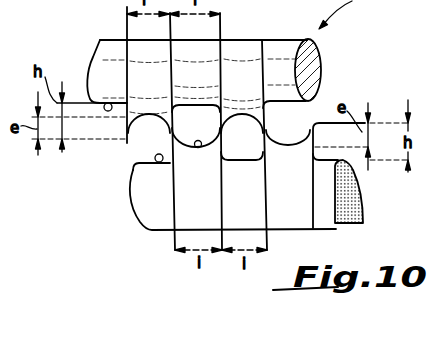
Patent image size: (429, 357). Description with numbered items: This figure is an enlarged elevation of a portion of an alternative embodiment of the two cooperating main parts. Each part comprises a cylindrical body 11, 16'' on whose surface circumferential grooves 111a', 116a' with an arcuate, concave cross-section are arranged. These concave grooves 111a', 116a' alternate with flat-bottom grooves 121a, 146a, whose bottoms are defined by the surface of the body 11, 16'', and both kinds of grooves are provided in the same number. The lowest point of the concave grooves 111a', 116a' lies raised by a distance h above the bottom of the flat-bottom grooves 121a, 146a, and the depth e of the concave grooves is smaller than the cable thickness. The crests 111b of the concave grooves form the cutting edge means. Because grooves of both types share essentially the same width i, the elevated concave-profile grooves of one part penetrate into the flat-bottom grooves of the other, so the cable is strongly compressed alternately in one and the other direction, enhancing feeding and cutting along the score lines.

The flat-bottom groove 121a is at (107, 103).
The cylindrical body 11 is at (278, 53).
The circumferential groove 116a' is at (196, 163).
The circumferential groove 111a' is at (110, 156).
The crest 111b is at (127, 139).
The flat-bottom groove 146a is at (162, 160).
The cylindrical body 16'' is at (218, 188).